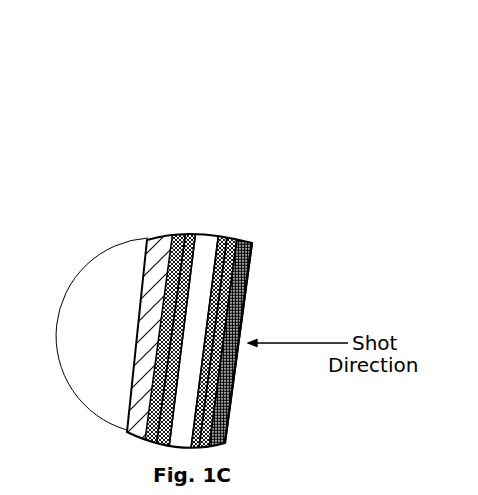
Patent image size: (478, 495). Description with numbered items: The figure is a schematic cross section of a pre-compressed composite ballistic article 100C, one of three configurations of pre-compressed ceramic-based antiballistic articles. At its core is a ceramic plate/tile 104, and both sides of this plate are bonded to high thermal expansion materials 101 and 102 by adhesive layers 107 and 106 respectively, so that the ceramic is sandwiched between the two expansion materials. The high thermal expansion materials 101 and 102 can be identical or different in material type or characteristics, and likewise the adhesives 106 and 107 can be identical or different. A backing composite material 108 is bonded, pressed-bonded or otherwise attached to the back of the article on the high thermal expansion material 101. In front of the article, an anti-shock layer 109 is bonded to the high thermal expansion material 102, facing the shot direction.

The pre-compressed composite ballistic article 100C is at (197, 154).
The high thermal expansion material 101 is at (173, 235).
The high thermal expansion material 102 is at (246, 237).
The ceramic plate/tile 104 is at (208, 234).
The adhesive layer 106 is at (229, 236).
The adhesive layer 107 is at (188, 234).
The backing composite material 108 is at (148, 238).
The anti-shock layer 109 is at (257, 270).